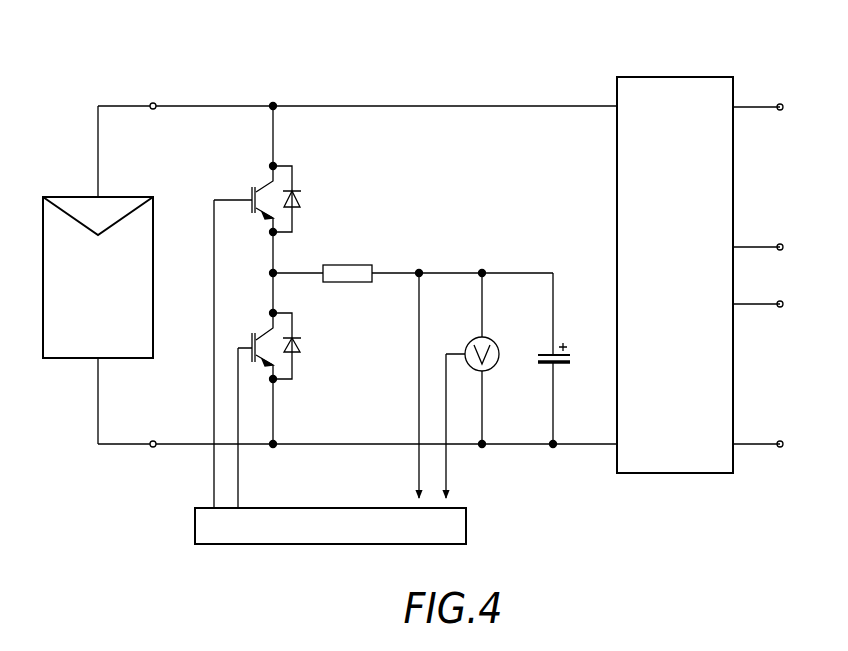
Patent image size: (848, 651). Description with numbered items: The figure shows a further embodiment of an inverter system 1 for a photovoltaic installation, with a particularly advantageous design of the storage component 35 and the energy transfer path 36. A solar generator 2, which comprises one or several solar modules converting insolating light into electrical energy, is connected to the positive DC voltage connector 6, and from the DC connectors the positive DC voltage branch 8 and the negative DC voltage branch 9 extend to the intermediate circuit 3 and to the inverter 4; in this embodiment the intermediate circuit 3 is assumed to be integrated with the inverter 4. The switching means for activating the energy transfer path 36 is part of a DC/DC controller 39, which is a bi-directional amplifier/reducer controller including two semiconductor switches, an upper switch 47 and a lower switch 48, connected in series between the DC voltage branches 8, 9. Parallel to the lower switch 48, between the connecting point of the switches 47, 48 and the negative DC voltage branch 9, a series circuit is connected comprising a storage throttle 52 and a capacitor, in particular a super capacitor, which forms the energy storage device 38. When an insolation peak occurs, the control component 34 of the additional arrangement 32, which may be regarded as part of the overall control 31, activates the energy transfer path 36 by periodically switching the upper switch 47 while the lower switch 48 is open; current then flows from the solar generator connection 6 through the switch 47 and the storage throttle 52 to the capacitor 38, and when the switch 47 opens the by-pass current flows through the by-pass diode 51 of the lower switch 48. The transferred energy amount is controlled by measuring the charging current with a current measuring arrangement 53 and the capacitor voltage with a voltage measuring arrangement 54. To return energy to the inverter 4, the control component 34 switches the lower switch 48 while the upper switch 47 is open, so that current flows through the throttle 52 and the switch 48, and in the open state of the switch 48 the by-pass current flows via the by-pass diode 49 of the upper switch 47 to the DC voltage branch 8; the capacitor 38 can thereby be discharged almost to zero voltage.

The inverter system 1 is at (88, 88).
The solar generator 2 is at (67, 186).
The intermediate circuit 3 is at (700, 250).
The inverter 4 is at (679, 105).
The positive DC voltage connector 6 is at (153, 103).
The positive DC voltage branch 8 is at (211, 106).
The negative DC voltage branch 9 is at (177, 449).
The overall control 31 is at (307, 558).
The additional arrangement 32 is at (490, 503).
The control component 34 is at (209, 539).
The storage component 35 is at (234, 306).
The energy transfer path 36 is at (272, 128).
The energy storage device 38 is at (563, 372).
The DC/DC controller 39 is at (413, 325).
The upper switch 47 is at (251, 190).
The lower switch 48 is at (251, 336).
The by-pass diode of the upper switch 49 is at (302, 196).
The by-pass diode of the lower switch 51 is at (302, 343).
The storage throttle 52 is at (348, 265).
The current measuring arrangement 53 is at (425, 270).
The voltage measuring arrangement 54 is at (493, 344).